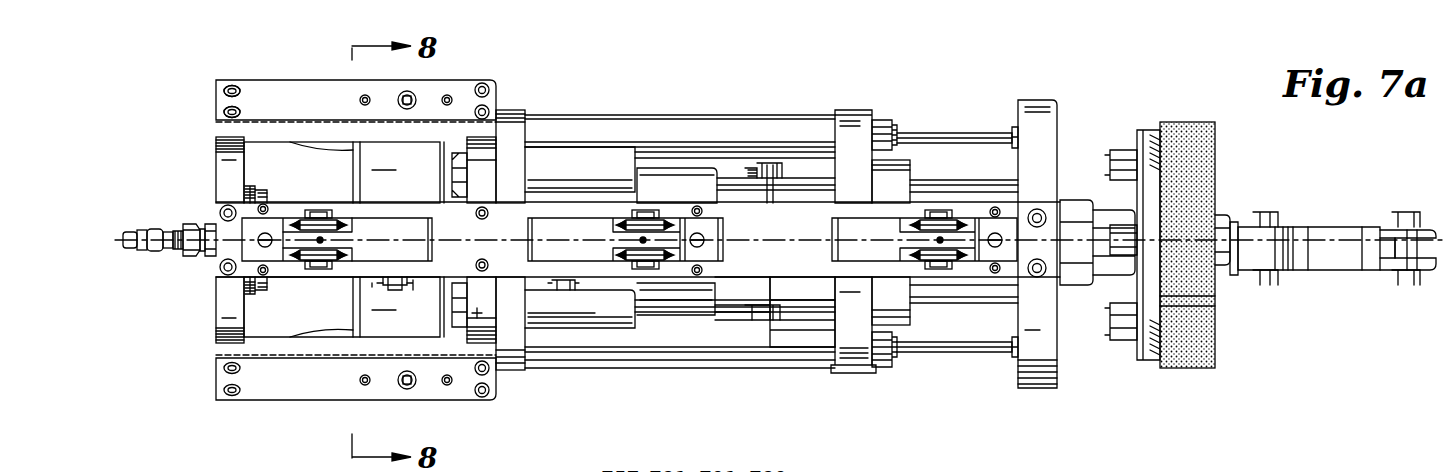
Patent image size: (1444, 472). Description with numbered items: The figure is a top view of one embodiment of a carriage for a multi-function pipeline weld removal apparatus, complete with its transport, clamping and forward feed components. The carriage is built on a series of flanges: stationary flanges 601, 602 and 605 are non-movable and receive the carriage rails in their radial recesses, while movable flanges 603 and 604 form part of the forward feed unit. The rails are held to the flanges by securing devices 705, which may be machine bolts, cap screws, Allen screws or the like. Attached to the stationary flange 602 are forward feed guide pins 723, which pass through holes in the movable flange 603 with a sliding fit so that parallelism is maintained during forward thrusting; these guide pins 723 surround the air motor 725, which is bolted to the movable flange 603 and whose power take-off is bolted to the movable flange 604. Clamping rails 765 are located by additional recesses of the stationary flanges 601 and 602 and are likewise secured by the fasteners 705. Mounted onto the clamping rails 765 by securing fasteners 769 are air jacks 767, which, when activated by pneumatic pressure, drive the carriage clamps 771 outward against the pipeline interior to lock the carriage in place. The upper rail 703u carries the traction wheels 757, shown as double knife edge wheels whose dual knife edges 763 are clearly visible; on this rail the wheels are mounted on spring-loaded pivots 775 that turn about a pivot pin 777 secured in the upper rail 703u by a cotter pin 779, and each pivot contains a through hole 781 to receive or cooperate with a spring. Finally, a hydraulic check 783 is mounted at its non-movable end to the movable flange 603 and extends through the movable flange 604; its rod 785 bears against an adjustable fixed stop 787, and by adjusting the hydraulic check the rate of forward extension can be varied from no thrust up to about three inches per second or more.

The stationary flange 601 is at (228, 298).
The stationary flange 602 is at (478, 318).
The movable flange 603 is at (508, 328).
The movable flange 604 is at (863, 355).
The stationary flange 605 is at (1054, 380).
The upper rail 703u is at (1022, 200).
The securing devices 705 is at (223, 112).
The forward feed guide pins 723 is at (615, 158).
The air motor 725 is at (700, 186).
The wheels 757 is at (647, 222).
The dual knife edges 763 is at (318, 212).
The clamping rails 765 is at (335, 100).
The air jacks 767 is at (375, 170).
The securing fasteners 769 is at (452, 100).
The carriage clamps 771 is at (410, 98).
The spring-loaded pivots 775 is at (410, 232).
The pivot pin 777 is at (393, 283).
The cotter pin 779 is at (372, 283).
The through hole 781 is at (268, 250).
The hydraulic check 783 is at (725, 348).
The rod 785 is at (935, 352).
The adjustable fixed stop 787 is at (1013, 358).